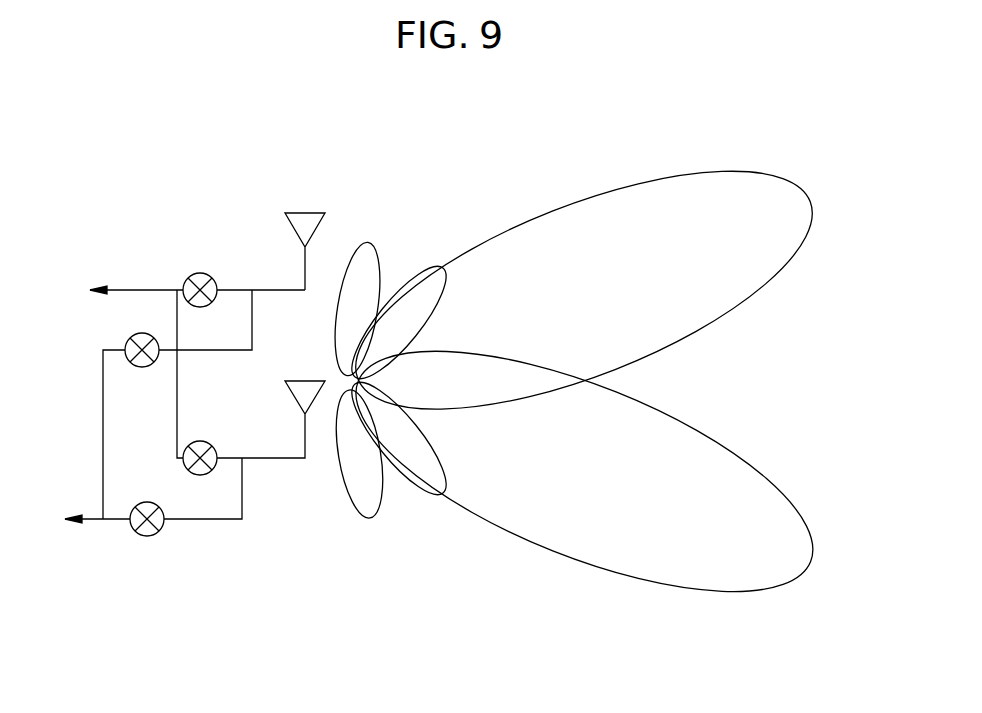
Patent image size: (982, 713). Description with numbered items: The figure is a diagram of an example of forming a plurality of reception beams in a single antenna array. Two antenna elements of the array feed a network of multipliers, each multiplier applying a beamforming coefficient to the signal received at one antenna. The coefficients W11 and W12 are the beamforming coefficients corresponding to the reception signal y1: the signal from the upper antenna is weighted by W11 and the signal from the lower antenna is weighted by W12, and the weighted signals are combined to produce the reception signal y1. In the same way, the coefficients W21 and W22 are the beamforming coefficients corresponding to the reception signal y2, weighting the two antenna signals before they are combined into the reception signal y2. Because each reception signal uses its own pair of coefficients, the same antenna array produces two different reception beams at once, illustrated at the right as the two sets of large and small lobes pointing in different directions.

The beamforming coefficient W11 is at (204, 277).
The beamforming coefficient W12 is at (208, 445).
The beamforming coefficient W21 is at (150, 377).
The beamforming coefficient W22 is at (156, 534).
The reception signal y1 is at (117, 290).
The reception signal y2 is at (72, 519).